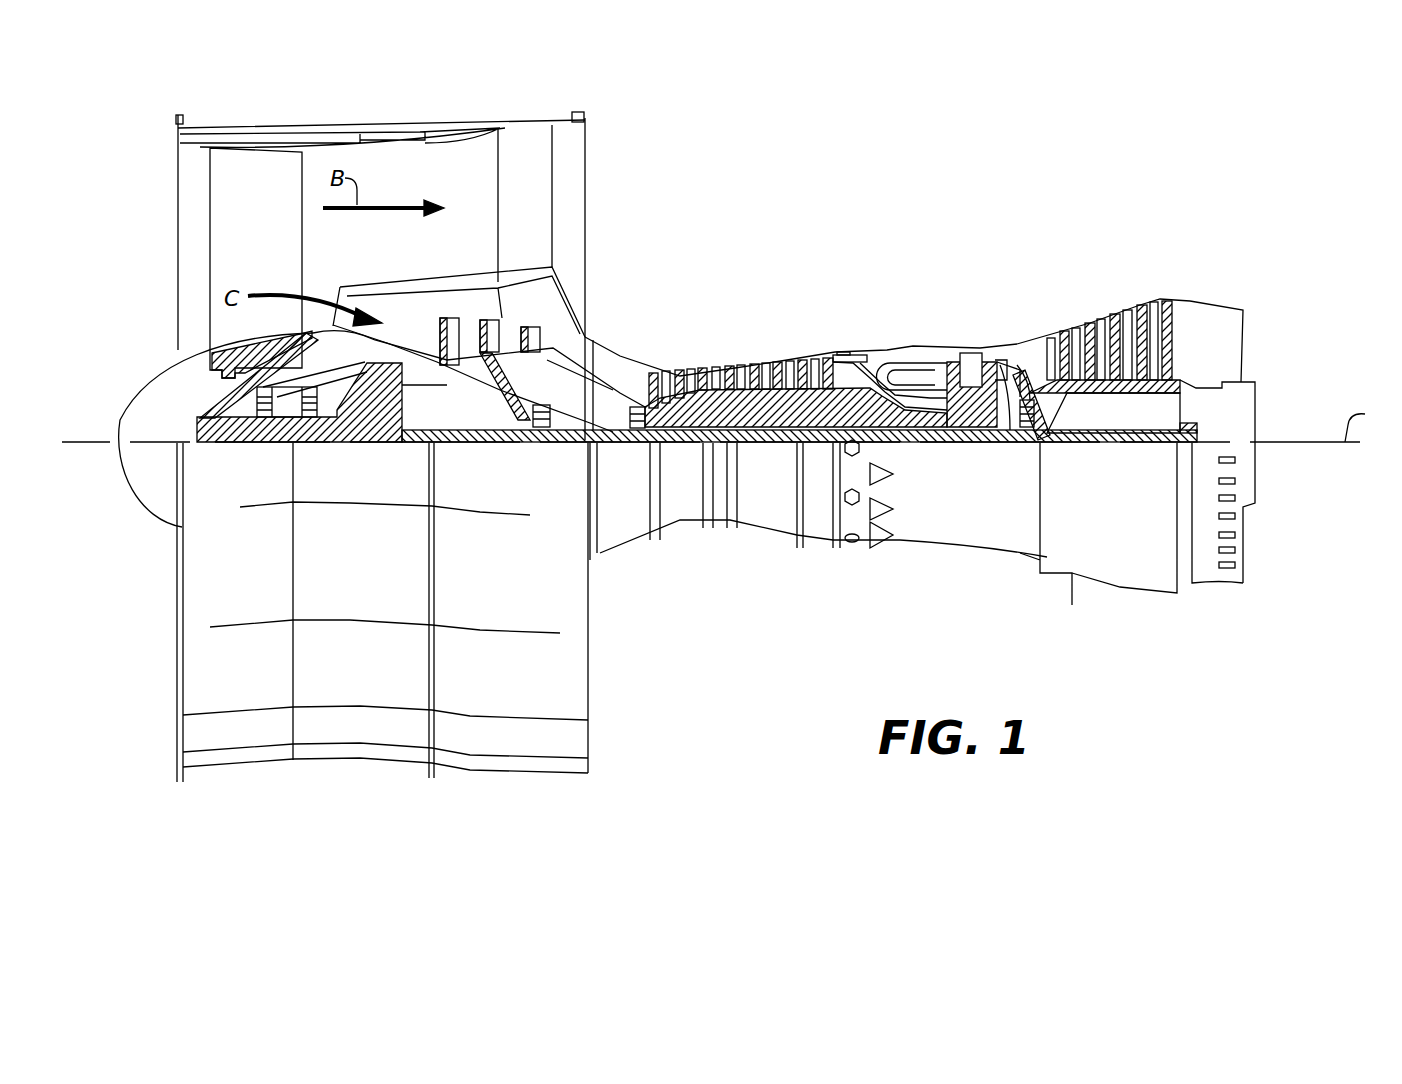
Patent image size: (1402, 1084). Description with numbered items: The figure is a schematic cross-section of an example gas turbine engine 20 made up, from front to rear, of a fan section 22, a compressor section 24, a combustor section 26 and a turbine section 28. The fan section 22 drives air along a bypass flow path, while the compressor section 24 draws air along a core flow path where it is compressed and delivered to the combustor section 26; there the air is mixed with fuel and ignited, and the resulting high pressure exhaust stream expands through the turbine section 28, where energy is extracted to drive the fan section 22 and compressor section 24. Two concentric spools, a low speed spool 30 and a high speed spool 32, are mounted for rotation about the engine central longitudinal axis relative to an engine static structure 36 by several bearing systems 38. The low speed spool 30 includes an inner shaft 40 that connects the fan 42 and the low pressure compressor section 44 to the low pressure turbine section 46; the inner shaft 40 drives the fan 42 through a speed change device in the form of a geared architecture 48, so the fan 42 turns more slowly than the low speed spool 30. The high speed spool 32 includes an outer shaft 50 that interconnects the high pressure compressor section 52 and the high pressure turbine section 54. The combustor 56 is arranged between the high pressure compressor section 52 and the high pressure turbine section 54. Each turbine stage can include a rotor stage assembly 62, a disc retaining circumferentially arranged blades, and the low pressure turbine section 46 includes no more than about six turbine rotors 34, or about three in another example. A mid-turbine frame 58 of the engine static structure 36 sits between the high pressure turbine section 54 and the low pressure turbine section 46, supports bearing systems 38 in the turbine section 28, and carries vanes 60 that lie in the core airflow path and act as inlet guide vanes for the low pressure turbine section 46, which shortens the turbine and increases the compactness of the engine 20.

The gas turbine engine 20 is at (905, 178).
The fan section 22 is at (172, 98).
The compressor section 24 is at (885, 236).
The combustor section 26 is at (995, 236).
The turbine section 28 is at (1190, 236).
The low speed spool 30 is at (763, 446).
The high speed spool 32 is at (813, 407).
The turbine rotors 34 is at (1115, 377).
The engine static structure 36 is at (810, 518).
The bearing systems 38 is at (262, 420).
The inner shaft 40 is at (607, 443).
The fan 42 is at (238, 262).
The low pressure compressor section 44 is at (558, 268).
The low pressure turbine section 46 is at (1117, 313).
The geared architecture 48 is at (390, 427).
The outer shaft 50 is at (900, 420).
The high pressure compressor section 52 is at (740, 410).
The high pressure turbine section 54 is at (973, 353).
The combustor 56 is at (897, 380).
The mid-turbine frame 58 is at (1032, 343).
The vanes 60 is at (1017, 363).
The rotor stage assembly 62 is at (963, 353).